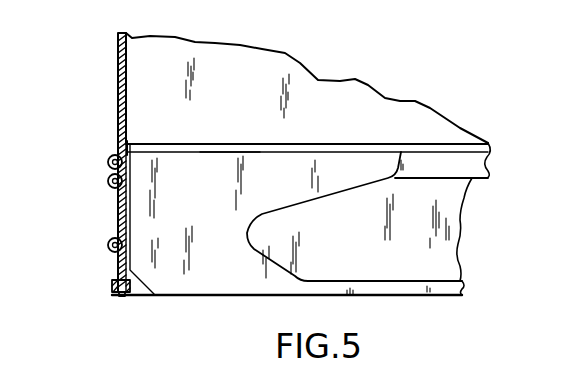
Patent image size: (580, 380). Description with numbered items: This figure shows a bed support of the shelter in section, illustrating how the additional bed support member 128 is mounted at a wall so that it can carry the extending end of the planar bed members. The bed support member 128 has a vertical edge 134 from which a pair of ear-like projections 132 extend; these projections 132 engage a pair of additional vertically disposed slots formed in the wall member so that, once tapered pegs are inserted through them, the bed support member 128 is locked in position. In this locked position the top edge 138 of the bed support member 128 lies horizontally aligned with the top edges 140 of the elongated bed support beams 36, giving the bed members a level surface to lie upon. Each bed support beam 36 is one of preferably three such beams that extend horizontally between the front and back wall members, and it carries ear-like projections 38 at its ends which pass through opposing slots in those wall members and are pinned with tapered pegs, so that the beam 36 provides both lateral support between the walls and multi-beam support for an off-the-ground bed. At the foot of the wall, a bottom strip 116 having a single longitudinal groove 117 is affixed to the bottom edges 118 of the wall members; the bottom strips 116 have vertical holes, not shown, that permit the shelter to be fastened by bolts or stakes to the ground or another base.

The bed support beam 36 is at (482, 172).
The ear-like projections 38 is at (112, 157).
The bottom strip 116 is at (112, 295).
The longitudinal groove 117 is at (122, 297).
The bottom edges 118 is at (112, 283).
The bed support member 128 is at (223, 283).
The ear-like projections 132 is at (108, 183).
The vertical edge 134 is at (122, 217).
The top edge 138 is at (226, 145).
The top edges 140 is at (442, 155).